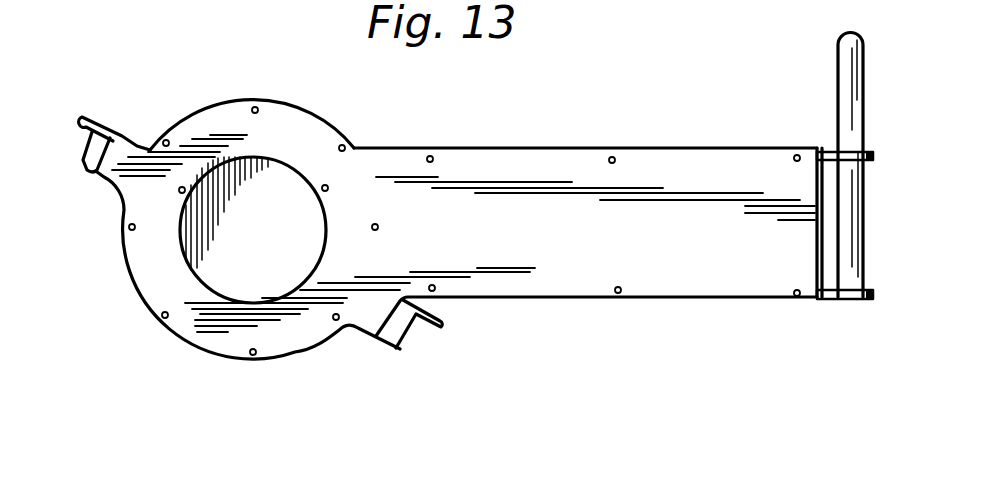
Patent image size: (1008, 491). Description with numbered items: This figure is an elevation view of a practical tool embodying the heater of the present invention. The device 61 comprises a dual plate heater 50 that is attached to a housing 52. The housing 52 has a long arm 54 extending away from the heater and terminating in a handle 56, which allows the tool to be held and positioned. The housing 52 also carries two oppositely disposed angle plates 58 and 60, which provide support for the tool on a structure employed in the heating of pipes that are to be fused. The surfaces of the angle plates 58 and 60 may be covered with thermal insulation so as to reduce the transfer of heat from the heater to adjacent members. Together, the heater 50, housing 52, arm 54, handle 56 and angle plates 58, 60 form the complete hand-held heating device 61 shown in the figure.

The dual plate heater 50 is at (293, 241).
The housing 52 is at (311, 146).
The long arm 54 is at (637, 247).
The handle 56 is at (864, 129).
The angle plate 58 is at (400, 348).
The angle plate 60 is at (84, 167).
The device 61 is at (490, 110).